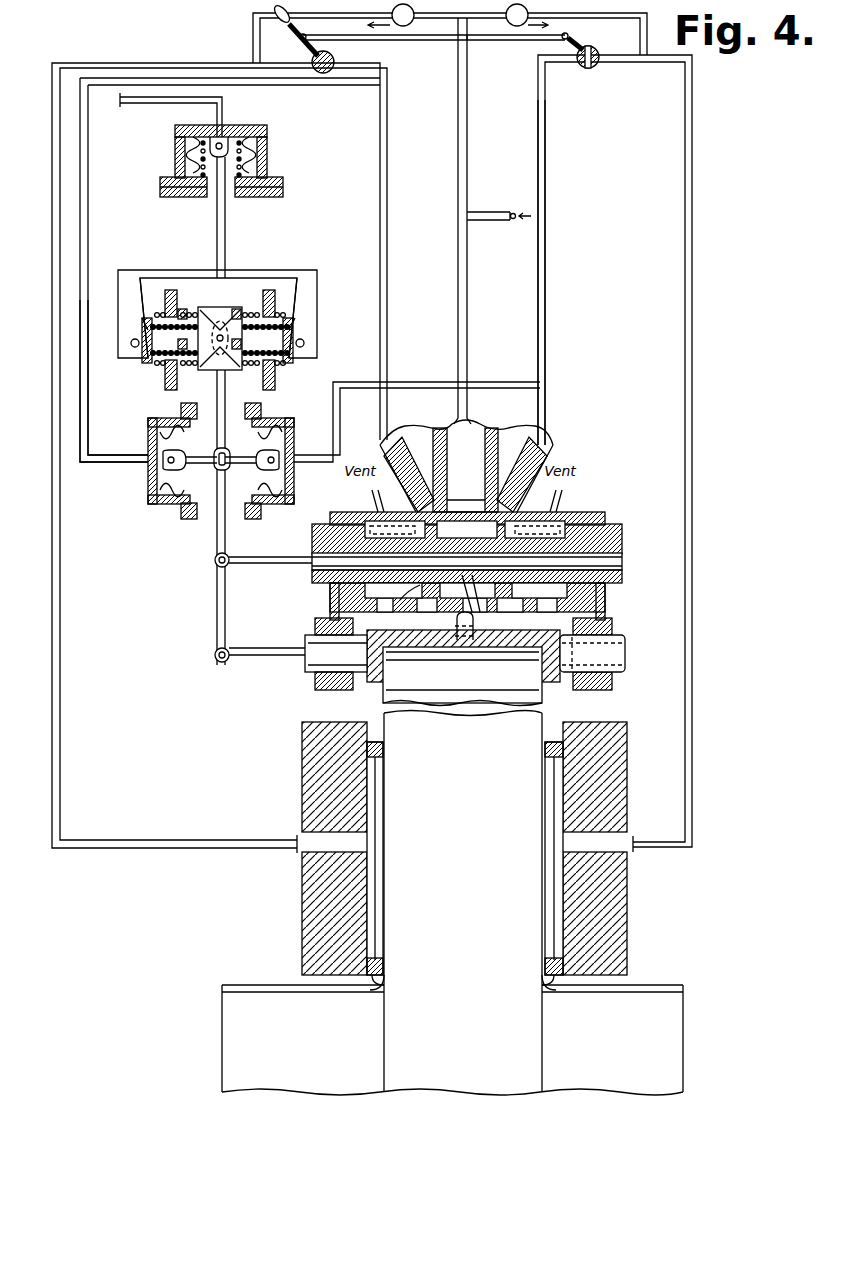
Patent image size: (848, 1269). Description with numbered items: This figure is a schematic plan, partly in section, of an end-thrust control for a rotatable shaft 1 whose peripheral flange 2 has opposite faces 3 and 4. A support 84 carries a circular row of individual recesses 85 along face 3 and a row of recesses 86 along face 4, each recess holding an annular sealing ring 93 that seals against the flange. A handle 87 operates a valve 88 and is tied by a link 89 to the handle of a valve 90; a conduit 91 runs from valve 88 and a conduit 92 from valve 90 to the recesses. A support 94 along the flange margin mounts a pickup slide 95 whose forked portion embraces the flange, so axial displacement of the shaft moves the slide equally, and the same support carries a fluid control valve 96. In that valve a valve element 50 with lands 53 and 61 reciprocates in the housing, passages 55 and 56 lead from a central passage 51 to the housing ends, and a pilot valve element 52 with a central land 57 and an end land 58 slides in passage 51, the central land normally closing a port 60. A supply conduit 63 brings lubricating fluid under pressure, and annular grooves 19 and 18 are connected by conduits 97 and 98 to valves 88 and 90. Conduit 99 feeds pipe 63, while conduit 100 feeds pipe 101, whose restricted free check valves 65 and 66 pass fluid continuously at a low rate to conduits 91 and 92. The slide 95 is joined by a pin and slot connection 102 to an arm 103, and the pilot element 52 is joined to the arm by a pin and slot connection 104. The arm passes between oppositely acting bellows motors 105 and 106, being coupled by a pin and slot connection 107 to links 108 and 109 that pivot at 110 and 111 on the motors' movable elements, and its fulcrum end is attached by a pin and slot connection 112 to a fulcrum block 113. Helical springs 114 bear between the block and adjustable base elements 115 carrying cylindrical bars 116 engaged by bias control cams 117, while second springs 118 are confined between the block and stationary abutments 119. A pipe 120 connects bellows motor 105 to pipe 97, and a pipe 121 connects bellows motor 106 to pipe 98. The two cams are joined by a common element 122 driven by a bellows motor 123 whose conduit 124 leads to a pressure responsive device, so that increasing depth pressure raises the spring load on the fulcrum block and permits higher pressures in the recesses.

The rotatable shaft 1 is at (222, 1040).
The peripheral flange 2 is at (455, 691).
The face of the flange 3 is at (386, 997).
The face of the flange 4 is at (540, 995).
The annular groove 18 is at (492, 516).
The annular groove 19 is at (478, 496).
The valve element 50 is at (467, 528).
The passage 51 is at (400, 584).
The pilot valve element 52 is at (300, 556).
The land 53 is at (610, 605).
The passage 55 is at (380, 524).
The passage 56 is at (552, 524).
The central land 57 is at (478, 606).
The end land 58 is at (625, 552).
The port 60 is at (456, 612).
The land 61 is at (412, 604).
The conduit 63 is at (478, 476).
The check valve 65 is at (517, 27).
The check valve 66 is at (403, 27).
The support 84 is at (610, 772).
The recess 85 is at (385, 916).
The recess 86 is at (545, 908).
The handle 87 is at (297, 36).
The valve 88 is at (328, 73).
The link 89 is at (445, 45).
The valve 90 is at (594, 50).
The conduit 91 is at (60, 724).
The conduit 92 is at (693, 167).
The annular sealing ring 93 is at (548, 760).
The support 94 is at (614, 632).
The pickup slide 95 is at (618, 658).
The fluid control valve 96 is at (620, 505).
The conduit 97 is at (388, 252).
The conduit 98 is at (547, 252).
The conduit 99 is at (468, 252).
The conduit 100 is at (468, 121).
The pipe 101 is at (480, 26).
The pin and slot connection 102 is at (220, 664).
The arm 103 is at (214, 604).
The pin and slot connection 104 is at (214, 566).
The bellows motor 105 is at (150, 500).
The bellows motor 106 is at (292, 490).
The pin and slot connection 107 is at (232, 459).
The link 108 is at (192, 458).
The link 109 is at (236, 465).
The pivotal connection 110 is at (162, 464).
The pivotal connection 111 is at (280, 462).
The pin and slot connection 112 is at (226, 326).
The fulcrum block 113 is at (212, 310).
The helical spring 114 is at (184, 328).
The adjustable base element 115 is at (148, 318).
The cylindrical bar 116 is at (130, 350).
The bias control cam 117 is at (122, 304).
The second spring 118 is at (183, 309).
The stationary abutment 119 is at (163, 380).
The pipe 120 is at (84, 420).
The pipe 121 is at (336, 420).
The common element 122 is at (164, 272).
The bellows motor 123 is at (258, 128).
The conduit 124 is at (148, 100).